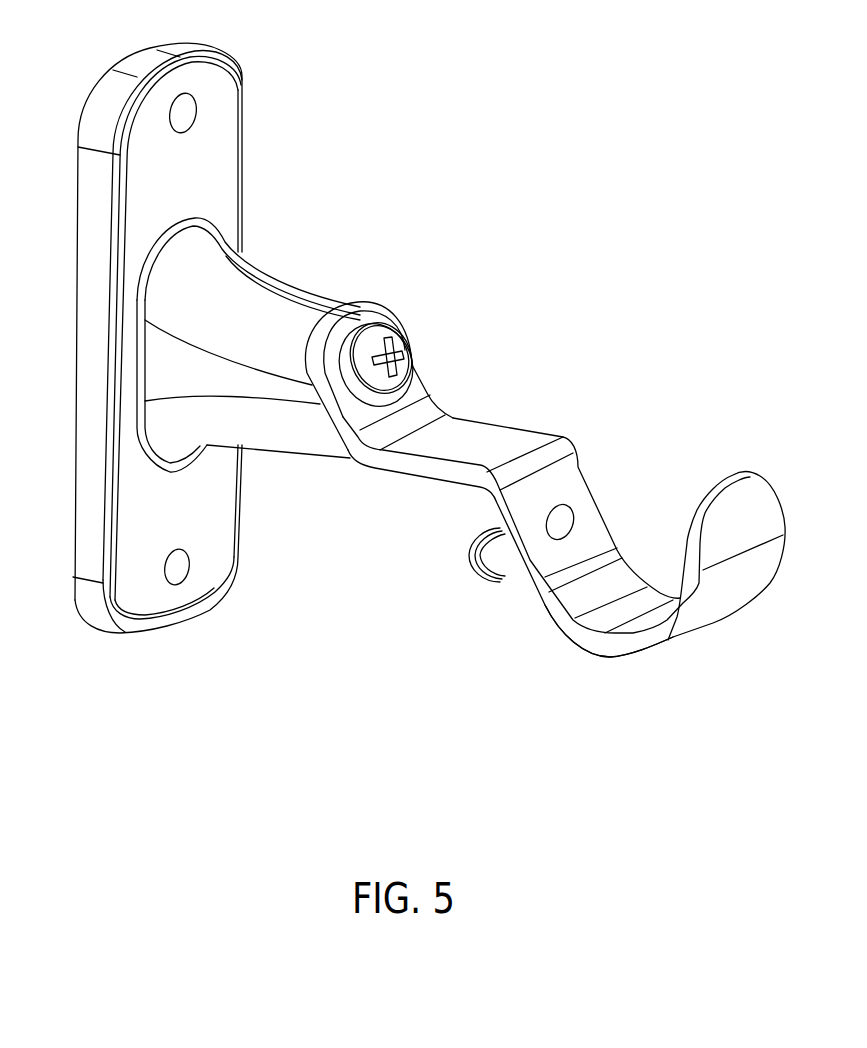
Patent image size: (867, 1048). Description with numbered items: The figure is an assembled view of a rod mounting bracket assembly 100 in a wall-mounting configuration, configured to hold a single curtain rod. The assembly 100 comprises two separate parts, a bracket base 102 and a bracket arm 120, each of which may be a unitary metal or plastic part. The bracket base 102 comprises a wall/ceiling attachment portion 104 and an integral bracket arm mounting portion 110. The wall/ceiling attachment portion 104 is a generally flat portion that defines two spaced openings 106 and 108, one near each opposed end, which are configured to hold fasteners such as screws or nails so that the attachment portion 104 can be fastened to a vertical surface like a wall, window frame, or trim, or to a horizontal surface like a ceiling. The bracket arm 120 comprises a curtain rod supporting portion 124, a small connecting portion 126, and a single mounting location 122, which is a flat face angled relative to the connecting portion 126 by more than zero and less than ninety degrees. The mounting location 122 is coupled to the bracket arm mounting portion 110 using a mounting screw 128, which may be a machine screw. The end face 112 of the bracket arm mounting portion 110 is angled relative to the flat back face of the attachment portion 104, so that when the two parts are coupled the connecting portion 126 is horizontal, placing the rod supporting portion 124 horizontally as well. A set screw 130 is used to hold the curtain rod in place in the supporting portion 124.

The rod mounting bracket assembly 100 is at (410, 382).
The bracket base 102 is at (197, 341).
The wall/ceiling attachment portion 104 is at (140, 180).
The opening 106 is at (180, 117).
The opening 108 is at (177, 570).
The bracket arm mounting portion 110 is at (283, 303).
The end face 112 is at (323, 430).
The bracket arm 120 is at (546, 518).
The mounting location 122 is at (410, 340).
The curtain rod supporting portion 124 is at (627, 660).
The small connecting portion 126 is at (508, 420).
The mounting screw 128 is at (412, 377).
The set screw 130 is at (468, 562).